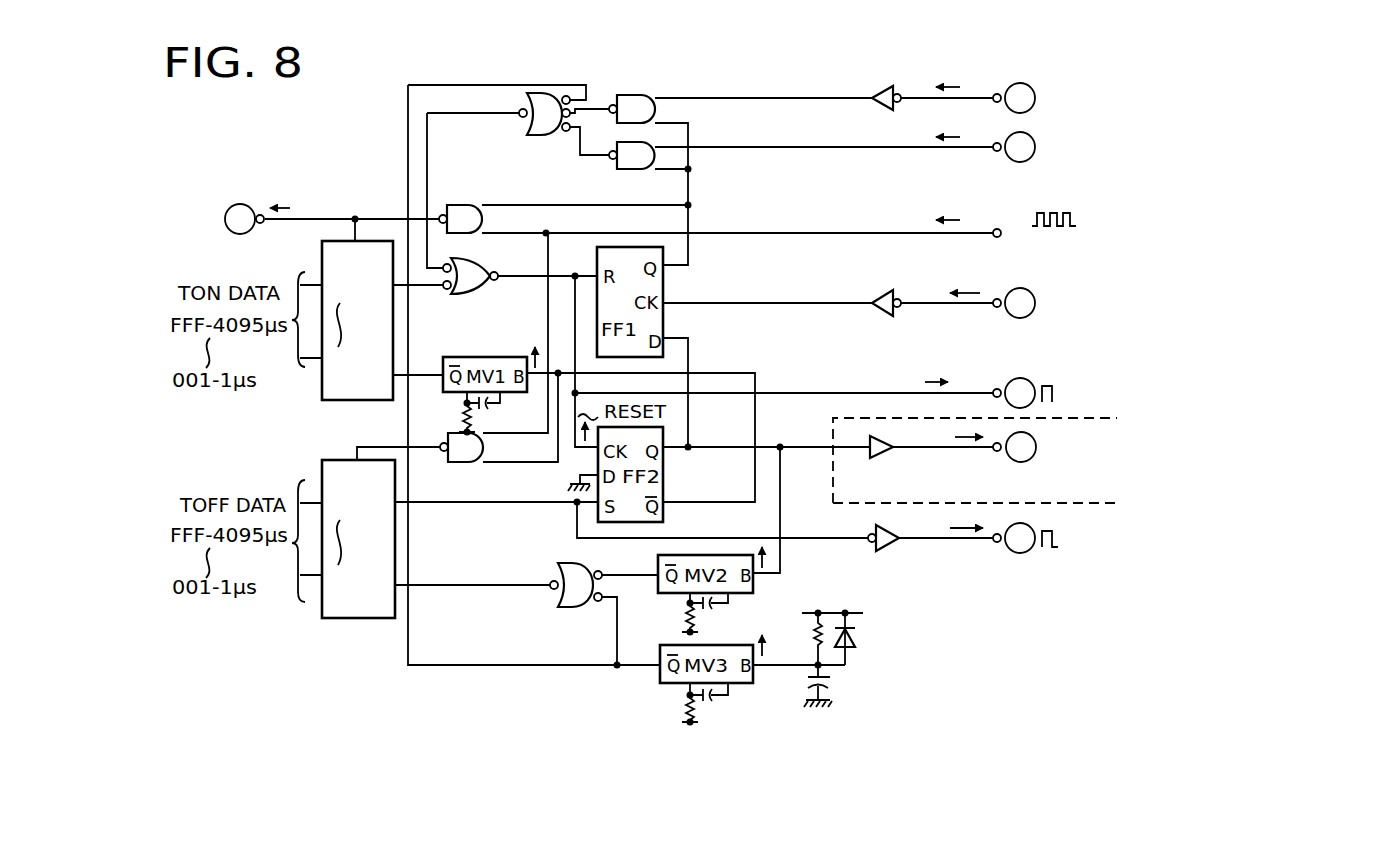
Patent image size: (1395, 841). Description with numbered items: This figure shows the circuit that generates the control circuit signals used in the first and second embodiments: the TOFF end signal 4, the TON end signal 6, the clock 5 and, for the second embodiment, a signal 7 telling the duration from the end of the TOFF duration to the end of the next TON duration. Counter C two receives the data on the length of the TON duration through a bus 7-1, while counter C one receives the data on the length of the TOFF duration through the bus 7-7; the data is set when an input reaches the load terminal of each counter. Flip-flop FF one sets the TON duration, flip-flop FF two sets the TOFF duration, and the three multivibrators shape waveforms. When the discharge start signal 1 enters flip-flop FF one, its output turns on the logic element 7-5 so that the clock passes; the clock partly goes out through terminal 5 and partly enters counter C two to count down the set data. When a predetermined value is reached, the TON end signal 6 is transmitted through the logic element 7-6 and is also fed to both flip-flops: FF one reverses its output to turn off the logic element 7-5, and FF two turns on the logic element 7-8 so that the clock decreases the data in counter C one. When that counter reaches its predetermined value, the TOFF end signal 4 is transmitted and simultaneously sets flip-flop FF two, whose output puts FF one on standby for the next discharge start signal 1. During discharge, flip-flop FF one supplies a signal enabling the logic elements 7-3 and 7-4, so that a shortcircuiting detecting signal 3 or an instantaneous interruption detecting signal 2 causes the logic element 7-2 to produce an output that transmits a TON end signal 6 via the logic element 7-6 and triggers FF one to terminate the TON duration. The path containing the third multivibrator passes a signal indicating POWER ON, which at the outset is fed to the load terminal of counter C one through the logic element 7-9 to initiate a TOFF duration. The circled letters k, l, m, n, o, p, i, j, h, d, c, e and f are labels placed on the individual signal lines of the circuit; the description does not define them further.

The bus 7-1 is at (312, 290).
The logic element 7-2 is at (540, 126).
The logic element 7-3 is at (636, 97).
The logic element 7-4 is at (637, 168).
The logic element 7-5 is at (463, 205).
The logic element 7-6 is at (478, 272).
The bus 7-7 is at (305, 602).
The logic element 7-8 is at (478, 434).
The logic element 7-9 is at (572, 578).
The signal k is at (355, 216).
The signal l (borrow output of C2) l is at (434, 287).
The signal m (load of C2) m is at (424, 374).
The signal n (down clock of C1) n is at (360, 446).
The signal o (borrow output of C1) o is at (431, 502).
The signal p (load of C1) p is at (436, 584).
The signal i (FF2 Q output) i is at (696, 445).
The signal j (FF1 Q output) j is at (690, 265).
The signal h (TON end signal) h is at (958, 391).
The signal d (short circuit detection signal) d is at (968, 96).
The signal c (instantaneous interruption detection signal) c is at (968, 146).
The signal e (1MHz clock) e is at (976, 231).
The signal f (MV3 output) f is at (788, 662).
The discharge start signal 1 is at (999, 303).
The instantaneous interruption detecting signal 2 is at (1181, 171).
The shortcircuiting detecting signal 3 is at (1163, 108).
The TOFF end signal 4 is at (1043, 531).
The clock 5 is at (244, 219).
The TON end signal 6 is at (1096, 381).
The signal telling duration from TOFF end to next TON end 7 is at (1021, 460).